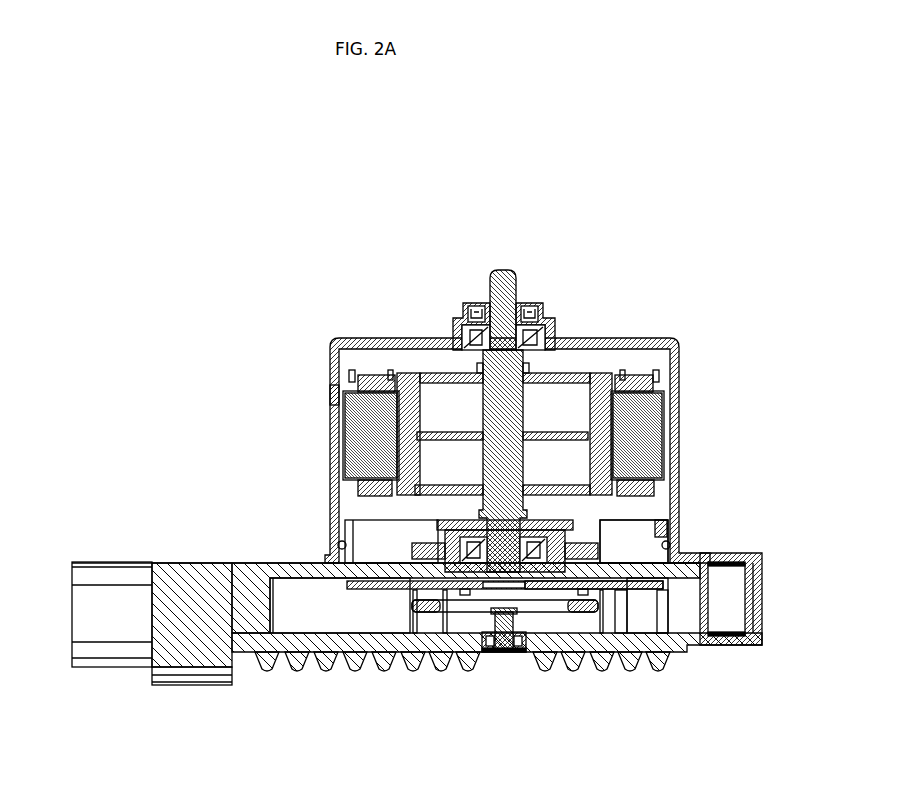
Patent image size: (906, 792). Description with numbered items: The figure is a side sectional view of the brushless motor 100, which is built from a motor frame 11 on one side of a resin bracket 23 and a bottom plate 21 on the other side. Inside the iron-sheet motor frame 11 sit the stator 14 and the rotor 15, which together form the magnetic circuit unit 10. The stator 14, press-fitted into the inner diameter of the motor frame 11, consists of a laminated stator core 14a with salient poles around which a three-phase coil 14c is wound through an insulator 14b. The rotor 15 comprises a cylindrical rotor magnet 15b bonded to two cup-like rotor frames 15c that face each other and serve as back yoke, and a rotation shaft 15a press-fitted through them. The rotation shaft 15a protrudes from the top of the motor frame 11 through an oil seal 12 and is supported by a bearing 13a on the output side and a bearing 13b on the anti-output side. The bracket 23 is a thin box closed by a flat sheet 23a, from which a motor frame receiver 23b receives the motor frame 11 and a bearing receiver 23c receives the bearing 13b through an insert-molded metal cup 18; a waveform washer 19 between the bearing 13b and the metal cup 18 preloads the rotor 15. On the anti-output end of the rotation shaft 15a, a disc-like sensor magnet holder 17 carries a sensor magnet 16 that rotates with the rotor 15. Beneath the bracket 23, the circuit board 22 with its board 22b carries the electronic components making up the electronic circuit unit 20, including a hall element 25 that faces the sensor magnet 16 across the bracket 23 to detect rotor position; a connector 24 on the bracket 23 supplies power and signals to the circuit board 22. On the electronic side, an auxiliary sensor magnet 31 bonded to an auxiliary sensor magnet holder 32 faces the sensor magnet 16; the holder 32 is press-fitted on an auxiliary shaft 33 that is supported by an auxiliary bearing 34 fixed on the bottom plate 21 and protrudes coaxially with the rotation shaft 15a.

The magnetic circuit unit 10 is at (63, 240).
The motor frame 11 is at (648, 340).
The oil seal 12 is at (528, 302).
The bearing 13a is at (533, 340).
The bearing 13b is at (440, 530).
The stator 14 is at (749, 343).
The stator core 14a is at (640, 450).
The insulator 14b is at (660, 395).
The coil 14c is at (632, 385).
The rotor 15 is at (243, 240).
The rotation shaft 15a is at (490, 277).
The rotor magnet 15b is at (338, 395).
The rotor frame 15c is at (420, 373).
The sensor magnet 16 is at (593, 590).
The sensor magnet holder 17 is at (357, 488).
The metal cup 18 is at (420, 562).
The waveform washer 19 is at (455, 556).
The electronic circuit unit 20 is at (65, 562).
The bottom plate 21 is at (295, 652).
The circuit board 22 is at (655, 588).
The board 22b is at (363, 592).
The bracket 23 is at (690, 607).
The flat sheet 23a is at (628, 560).
The motor frame receiver 23b is at (602, 528).
The bearing receiver 23c is at (660, 533).
The connector 24 is at (198, 615).
The hall element 25 is at (580, 615).
The auxiliary sensor magnet 31 is at (430, 612).
The auxiliary sensor magnet holder 32 is at (457, 613).
The auxiliary shaft 33 is at (497, 665).
The auxiliary bearing 34 is at (525, 653).
The motor 100 is at (723, 667).